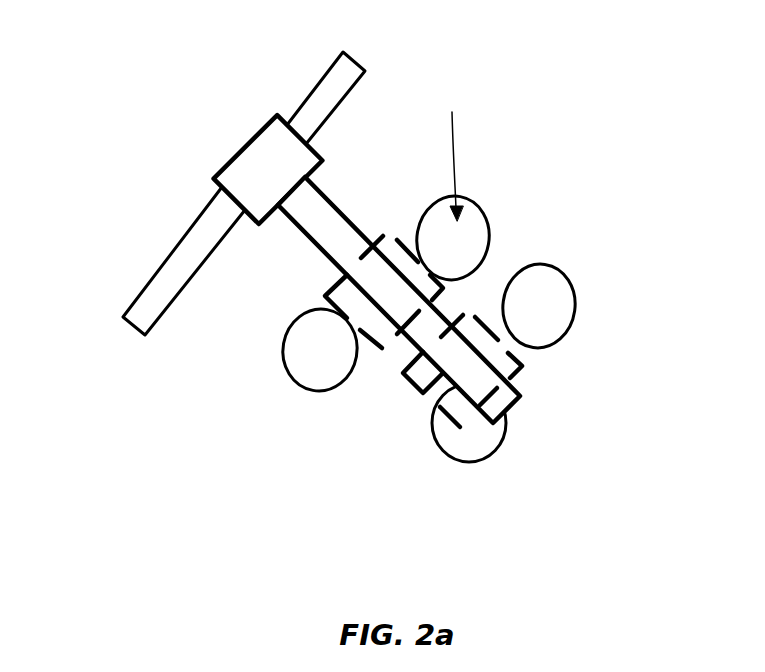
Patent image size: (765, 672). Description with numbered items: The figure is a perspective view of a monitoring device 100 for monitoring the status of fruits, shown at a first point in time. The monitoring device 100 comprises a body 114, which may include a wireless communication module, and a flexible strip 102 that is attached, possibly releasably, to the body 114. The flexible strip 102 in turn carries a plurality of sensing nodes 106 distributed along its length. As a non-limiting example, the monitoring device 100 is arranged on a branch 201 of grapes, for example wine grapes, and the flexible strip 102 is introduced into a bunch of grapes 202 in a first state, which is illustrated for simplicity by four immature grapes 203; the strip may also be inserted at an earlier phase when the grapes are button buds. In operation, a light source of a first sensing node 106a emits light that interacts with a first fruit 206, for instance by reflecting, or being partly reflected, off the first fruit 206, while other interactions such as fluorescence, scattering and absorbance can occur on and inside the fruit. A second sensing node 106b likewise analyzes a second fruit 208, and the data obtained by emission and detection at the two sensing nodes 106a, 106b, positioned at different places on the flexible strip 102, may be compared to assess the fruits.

The monitoring device 100 is at (284, 230).
The flexible strip 102 is at (370, 286).
The sensing nodes 106 is at (370, 347).
The first sensing node 106a is at (347, 305).
The second sensing node 106b is at (435, 390).
The body 114 is at (243, 177).
The branch 201 is at (318, 118).
The bunch of grapes 202 is at (445, 153).
The immature grapes 203 is at (415, 330).
The first fruit 206 is at (300, 350).
The second fruit 208 is at (458, 442).